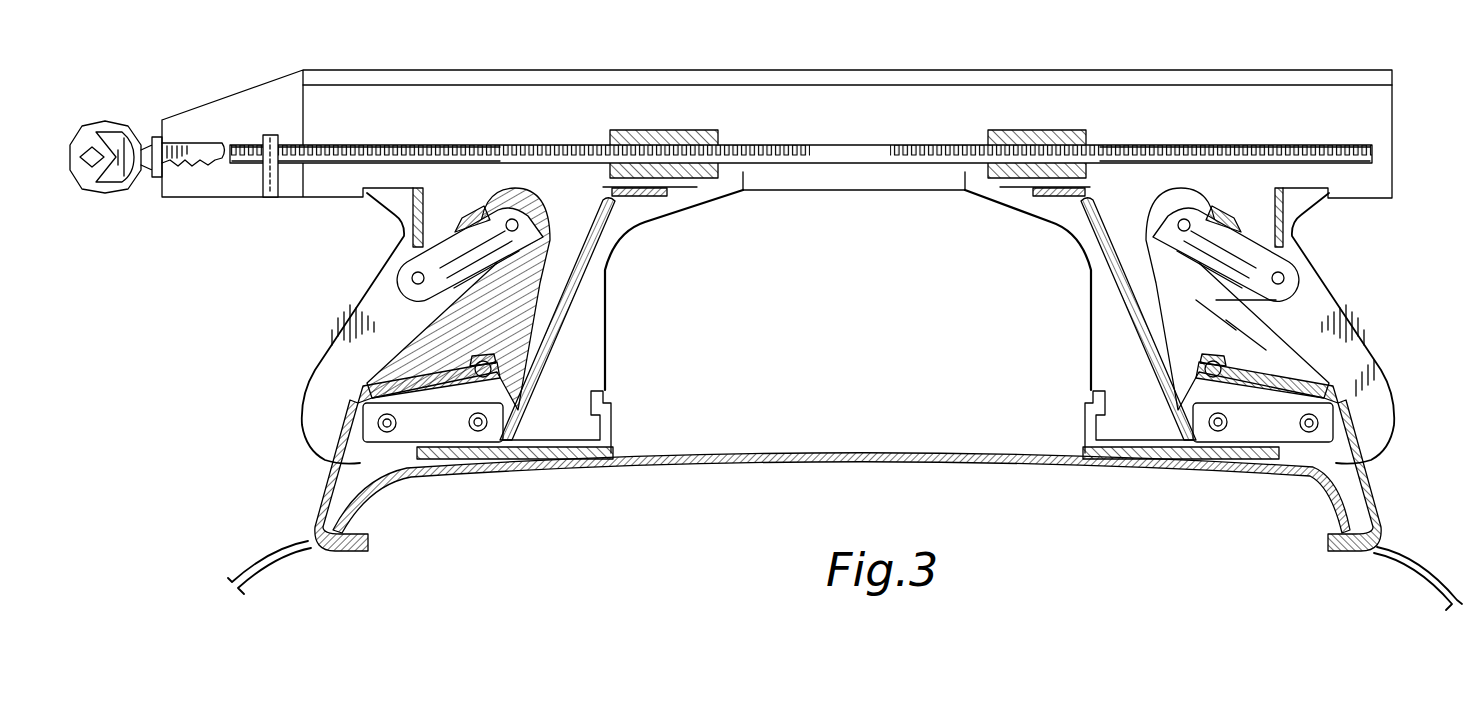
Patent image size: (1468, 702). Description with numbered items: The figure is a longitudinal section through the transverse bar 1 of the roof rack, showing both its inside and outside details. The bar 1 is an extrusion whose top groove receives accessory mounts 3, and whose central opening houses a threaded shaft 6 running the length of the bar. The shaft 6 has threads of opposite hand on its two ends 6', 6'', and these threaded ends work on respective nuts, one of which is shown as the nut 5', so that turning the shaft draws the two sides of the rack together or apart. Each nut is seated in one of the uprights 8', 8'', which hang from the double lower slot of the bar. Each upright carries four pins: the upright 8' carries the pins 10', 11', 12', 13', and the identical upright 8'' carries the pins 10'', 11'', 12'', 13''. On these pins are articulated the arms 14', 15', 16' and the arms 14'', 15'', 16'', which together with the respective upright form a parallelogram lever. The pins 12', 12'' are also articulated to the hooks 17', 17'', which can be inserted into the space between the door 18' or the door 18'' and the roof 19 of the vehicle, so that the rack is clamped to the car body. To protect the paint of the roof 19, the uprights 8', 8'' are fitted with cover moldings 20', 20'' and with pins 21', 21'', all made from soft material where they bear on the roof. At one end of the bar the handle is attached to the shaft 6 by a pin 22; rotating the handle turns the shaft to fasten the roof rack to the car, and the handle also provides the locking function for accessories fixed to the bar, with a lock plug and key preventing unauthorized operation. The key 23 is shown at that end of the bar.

The transverse bar 1 is at (327, 93).
The accessory mounts 3 is at (405, 75).
The nut 5' is at (848, 112).
The threaded shaft 6 is at (801, 99).
The threaded end 6' is at (366, 93).
The threaded end 6'' is at (1235, 98).
The upright 8' is at (342, 328).
The upright 8'' is at (1344, 328).
The pin 10' is at (360, 287).
The pin 10'' is at (1327, 269).
The pin 11' is at (590, 248).
The pin 11'' is at (1113, 242).
The pin 12' is at (562, 355).
The pin 12'' is at (1166, 370).
The pin 13' is at (433, 473).
The pin 13'' is at (1263, 462).
The arm 14' is at (426, 299).
The arm 14'' is at (1264, 299).
The arm 15' is at (467, 468).
The arm 15'' is at (1202, 465).
The arm 16' is at (581, 319).
The arm 16'' is at (1138, 319).
The hook 17' is at (380, 456).
The hook 17'' is at (1313, 456).
The door 18' is at (269, 555).
The door 18'' is at (1396, 578).
The roof 19 is at (350, 507).
The cover molding 20' is at (598, 422).
The cover molding 20'' is at (1101, 422).
The pin 21' is at (515, 478).
The pin 21'' is at (1181, 478).
The pin 22 is at (269, 198).
The lock key 23 is at (118, 188).